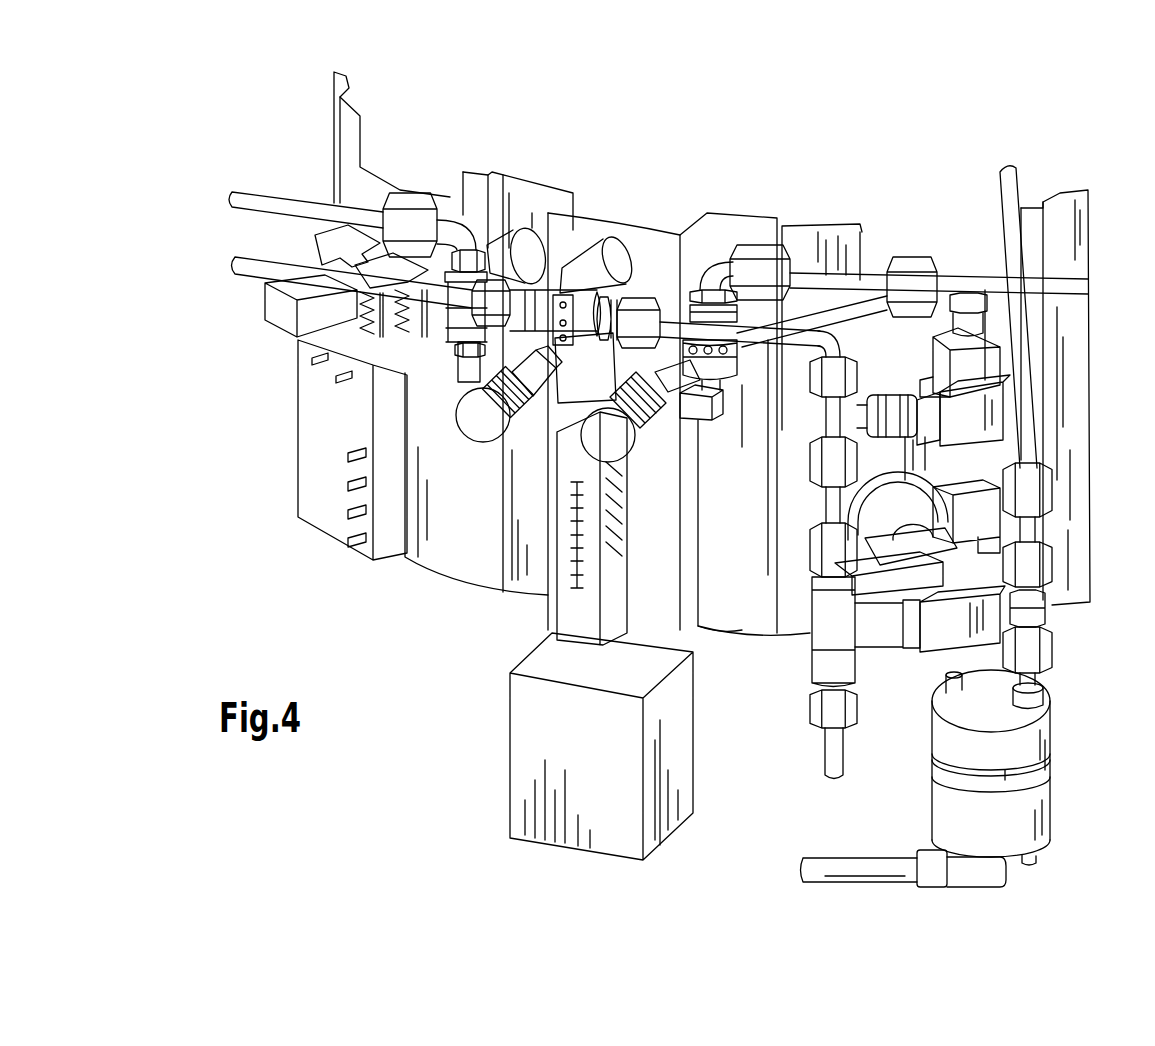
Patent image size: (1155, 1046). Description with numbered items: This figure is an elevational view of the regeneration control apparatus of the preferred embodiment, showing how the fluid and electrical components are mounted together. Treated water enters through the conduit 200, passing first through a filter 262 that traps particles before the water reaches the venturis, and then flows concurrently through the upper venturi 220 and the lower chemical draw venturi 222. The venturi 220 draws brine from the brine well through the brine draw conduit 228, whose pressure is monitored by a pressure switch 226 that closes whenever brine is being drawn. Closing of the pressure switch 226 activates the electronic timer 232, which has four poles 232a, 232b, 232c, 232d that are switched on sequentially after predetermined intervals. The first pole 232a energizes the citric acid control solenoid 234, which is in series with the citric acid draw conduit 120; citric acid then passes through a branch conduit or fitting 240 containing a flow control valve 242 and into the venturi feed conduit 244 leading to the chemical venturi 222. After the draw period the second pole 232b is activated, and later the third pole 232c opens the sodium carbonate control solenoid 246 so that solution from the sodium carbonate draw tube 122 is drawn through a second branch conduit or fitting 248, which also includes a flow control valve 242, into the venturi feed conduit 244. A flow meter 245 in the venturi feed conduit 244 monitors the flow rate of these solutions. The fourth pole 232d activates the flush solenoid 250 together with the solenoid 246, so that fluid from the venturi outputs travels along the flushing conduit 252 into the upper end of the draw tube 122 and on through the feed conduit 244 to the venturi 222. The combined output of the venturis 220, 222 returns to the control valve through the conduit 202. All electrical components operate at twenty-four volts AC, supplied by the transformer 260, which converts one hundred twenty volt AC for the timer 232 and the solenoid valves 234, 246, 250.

The citric acid draw conduit 120 is at (870, 280).
The sodium carbonate draw tube 122 is at (255, 196).
The conduit 200 is at (868, 862).
The conduit 202 is at (825, 772).
The venturi 220 is at (928, 655).
The chemical draw venturi 222 is at (1005, 410).
The pressure switch 226 is at (840, 507).
The brine draw conduit 228 is at (1008, 225).
The electronic timer 232 is at (298, 398).
The first pole 232a is at (350, 452).
The second pole 232b is at (350, 481).
The third pole 232c is at (350, 512).
The fourth pole 232d is at (350, 542).
The citric acid control solenoid 234 is at (730, 405).
The branch conduit or fitting 240 is at (705, 425).
The flow control valve 242 is at (478, 428).
The venturi feed conduit 244 is at (835, 300).
The flow meter 245 is at (548, 595).
The sodium carbonate control solenoid 246 is at (522, 235).
The branch conduit or fitting 248 is at (445, 362).
The flush solenoid 250 is at (612, 250).
The flushing conduit 252 is at (250, 270).
The transformer 260 is at (510, 725).
The filter 262 is at (1048, 795).